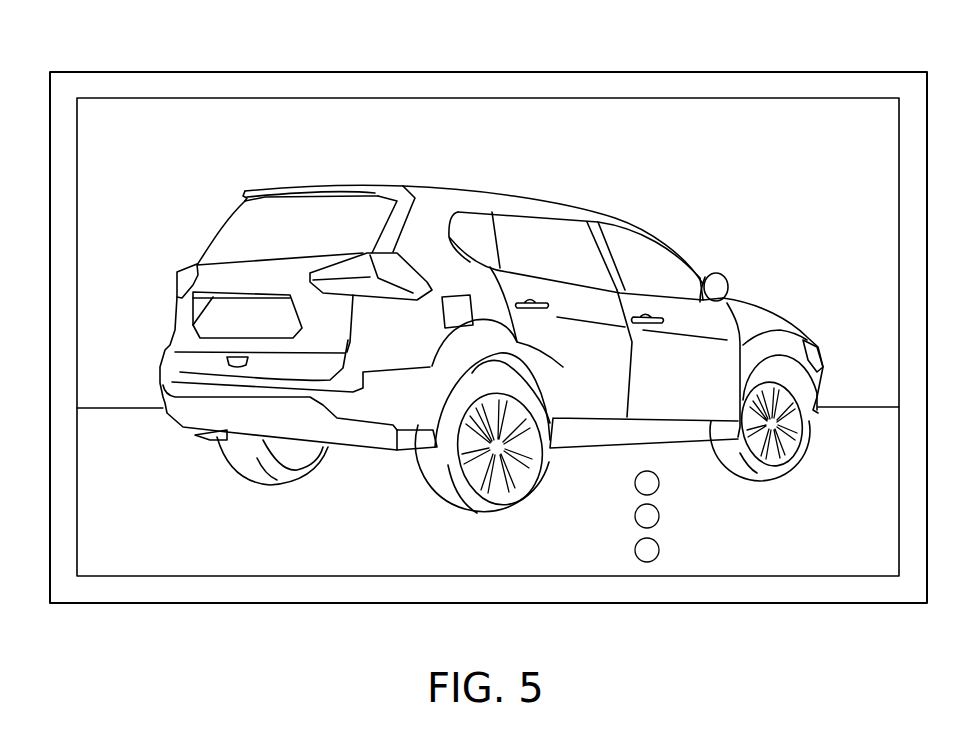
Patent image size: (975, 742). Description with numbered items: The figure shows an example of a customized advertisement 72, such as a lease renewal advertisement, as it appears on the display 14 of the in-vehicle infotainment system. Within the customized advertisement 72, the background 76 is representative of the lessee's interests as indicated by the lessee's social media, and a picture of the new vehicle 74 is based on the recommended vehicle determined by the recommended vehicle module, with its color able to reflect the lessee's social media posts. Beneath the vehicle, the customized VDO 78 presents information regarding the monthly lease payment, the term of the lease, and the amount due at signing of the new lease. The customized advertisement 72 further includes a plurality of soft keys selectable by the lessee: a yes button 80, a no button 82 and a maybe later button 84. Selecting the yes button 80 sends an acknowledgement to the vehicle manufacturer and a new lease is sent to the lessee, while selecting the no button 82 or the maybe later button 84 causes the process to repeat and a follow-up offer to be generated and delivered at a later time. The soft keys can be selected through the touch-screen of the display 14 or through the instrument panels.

The display 14 is at (790, 72).
The customized advertisement 72 is at (125, 312).
The new vehicle 74 is at (208, 240).
The background 76 is at (217, 114).
The customized VDO 78 is at (177, 542).
The yes button 80 is at (635, 478).
The no button 82 is at (635, 515).
The maybe later button 84 is at (635, 551).